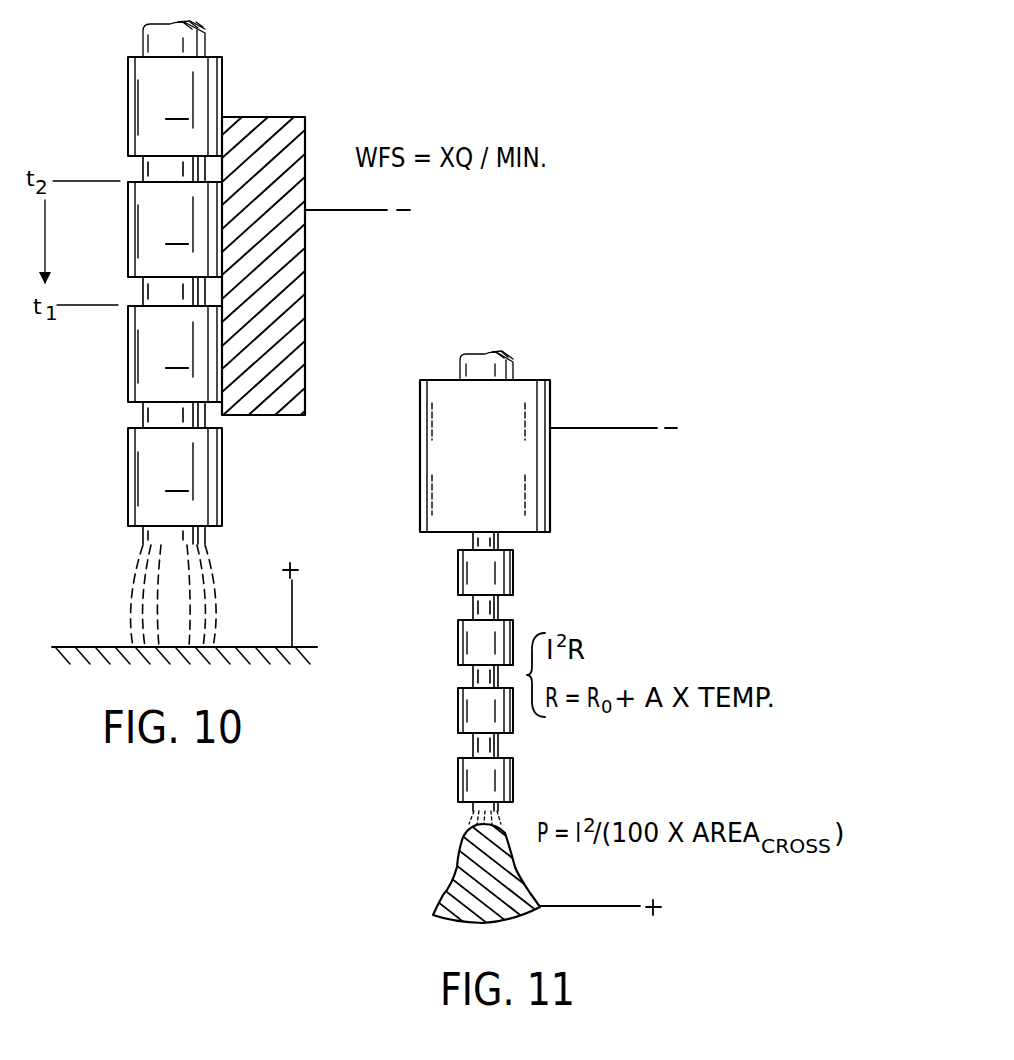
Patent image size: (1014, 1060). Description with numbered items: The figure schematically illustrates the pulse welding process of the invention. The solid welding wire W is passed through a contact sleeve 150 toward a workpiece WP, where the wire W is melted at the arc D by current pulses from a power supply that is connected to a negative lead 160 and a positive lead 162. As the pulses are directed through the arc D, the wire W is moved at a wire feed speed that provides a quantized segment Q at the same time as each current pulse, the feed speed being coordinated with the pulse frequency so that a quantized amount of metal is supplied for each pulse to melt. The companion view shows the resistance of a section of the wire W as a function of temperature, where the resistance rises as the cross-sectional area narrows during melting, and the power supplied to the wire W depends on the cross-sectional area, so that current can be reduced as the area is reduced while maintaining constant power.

In FIG. 10, the contact sleeve 150 is at (305, 117).
In FIG. 11, the contact sleeve 150 is at (550, 398).
In FIG. 10, the negative lead 160 is at (350, 210).
In FIG. 11, the negative lead 160 is at (628, 428).
In FIG. 10, the positive lead 162 is at (293, 606).
In FIG. 11, the positive lead 162 is at (585, 906).